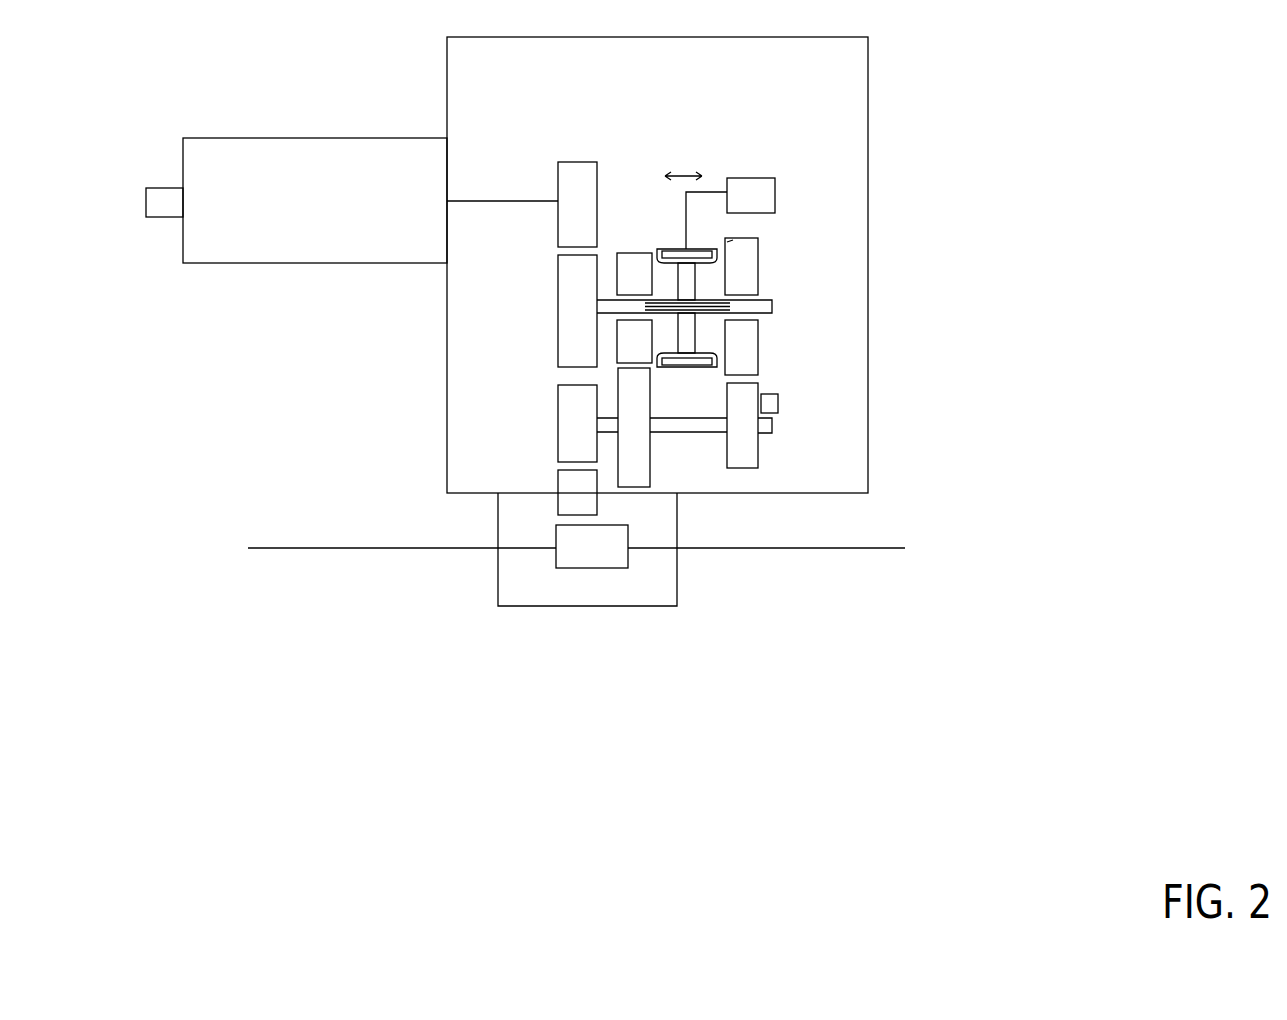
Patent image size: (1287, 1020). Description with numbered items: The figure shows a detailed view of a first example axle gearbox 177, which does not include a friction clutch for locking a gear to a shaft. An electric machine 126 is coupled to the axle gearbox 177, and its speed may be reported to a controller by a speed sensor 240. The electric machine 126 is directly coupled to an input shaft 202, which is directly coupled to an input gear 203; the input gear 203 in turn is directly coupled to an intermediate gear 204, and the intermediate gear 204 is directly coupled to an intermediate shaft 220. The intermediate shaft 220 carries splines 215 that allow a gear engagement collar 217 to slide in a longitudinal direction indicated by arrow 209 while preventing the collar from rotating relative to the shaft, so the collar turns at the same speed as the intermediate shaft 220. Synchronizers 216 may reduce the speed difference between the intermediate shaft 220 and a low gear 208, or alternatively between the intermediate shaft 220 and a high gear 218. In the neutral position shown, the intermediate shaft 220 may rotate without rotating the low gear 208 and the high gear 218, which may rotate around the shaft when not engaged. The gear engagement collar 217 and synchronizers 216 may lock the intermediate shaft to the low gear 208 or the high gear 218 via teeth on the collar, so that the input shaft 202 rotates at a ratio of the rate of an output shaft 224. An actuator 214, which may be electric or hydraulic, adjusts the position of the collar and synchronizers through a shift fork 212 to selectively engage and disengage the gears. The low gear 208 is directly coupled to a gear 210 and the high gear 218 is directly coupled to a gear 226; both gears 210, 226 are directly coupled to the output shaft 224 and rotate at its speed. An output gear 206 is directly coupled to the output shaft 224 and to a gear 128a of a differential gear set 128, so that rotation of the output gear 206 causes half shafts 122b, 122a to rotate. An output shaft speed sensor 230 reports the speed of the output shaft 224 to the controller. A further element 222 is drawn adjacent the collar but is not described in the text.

The axle gearbox 177 is at (462, 37).
The electric machine 126 is at (315, 200).
The speed sensor 240 is at (146, 203).
The input shaft 202 is at (501, 201).
The input gear 203 is at (574, 167).
The intermediate gear 204 is at (563, 302).
The output gear 206 is at (563, 425).
The low gear 208 is at (635, 265).
The arrow 209 is at (680, 172).
The gear 210 is at (633, 458).
The shift fork 212 is at (712, 190).
The actuator 214 is at (754, 188).
The splines 215 is at (733, 308).
The synchronizers 216 is at (727, 242).
The gear engagement collar 217 is at (698, 286).
The high gear 218 is at (758, 278).
The intermediate shaft 220 is at (772, 302).
The sleeve hub 222 is at (700, 343).
The output shaft 224 is at (772, 425).
The gear 226 is at (747, 458).
The output shaft speed sensor 230 is at (778, 403).
The differential gear set 128 is at (587, 549).
The gear 128a is at (573, 507).
The half shaft 122a is at (735, 548).
The half shaft 122b is at (293, 548).